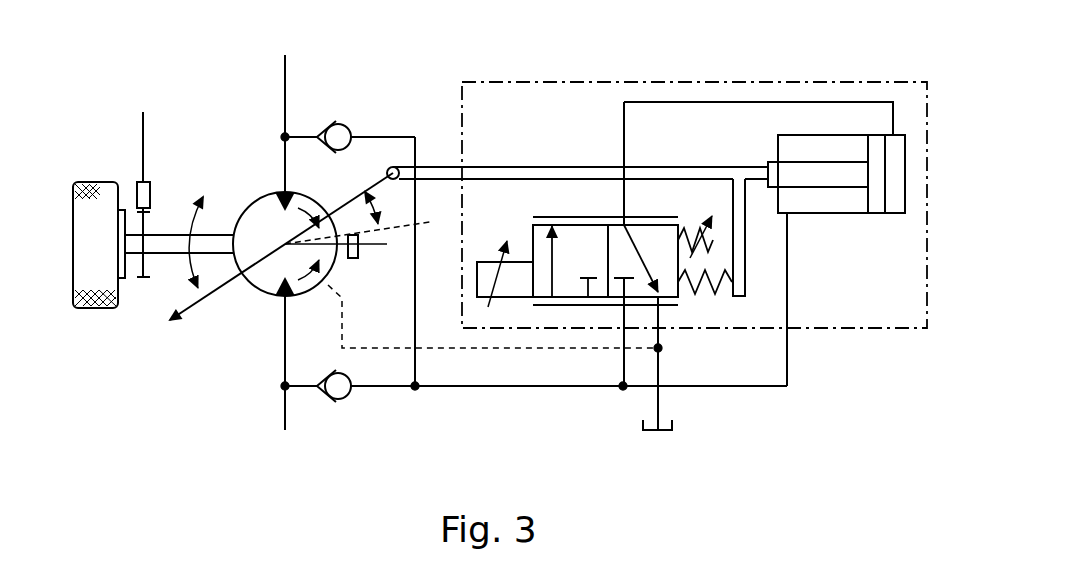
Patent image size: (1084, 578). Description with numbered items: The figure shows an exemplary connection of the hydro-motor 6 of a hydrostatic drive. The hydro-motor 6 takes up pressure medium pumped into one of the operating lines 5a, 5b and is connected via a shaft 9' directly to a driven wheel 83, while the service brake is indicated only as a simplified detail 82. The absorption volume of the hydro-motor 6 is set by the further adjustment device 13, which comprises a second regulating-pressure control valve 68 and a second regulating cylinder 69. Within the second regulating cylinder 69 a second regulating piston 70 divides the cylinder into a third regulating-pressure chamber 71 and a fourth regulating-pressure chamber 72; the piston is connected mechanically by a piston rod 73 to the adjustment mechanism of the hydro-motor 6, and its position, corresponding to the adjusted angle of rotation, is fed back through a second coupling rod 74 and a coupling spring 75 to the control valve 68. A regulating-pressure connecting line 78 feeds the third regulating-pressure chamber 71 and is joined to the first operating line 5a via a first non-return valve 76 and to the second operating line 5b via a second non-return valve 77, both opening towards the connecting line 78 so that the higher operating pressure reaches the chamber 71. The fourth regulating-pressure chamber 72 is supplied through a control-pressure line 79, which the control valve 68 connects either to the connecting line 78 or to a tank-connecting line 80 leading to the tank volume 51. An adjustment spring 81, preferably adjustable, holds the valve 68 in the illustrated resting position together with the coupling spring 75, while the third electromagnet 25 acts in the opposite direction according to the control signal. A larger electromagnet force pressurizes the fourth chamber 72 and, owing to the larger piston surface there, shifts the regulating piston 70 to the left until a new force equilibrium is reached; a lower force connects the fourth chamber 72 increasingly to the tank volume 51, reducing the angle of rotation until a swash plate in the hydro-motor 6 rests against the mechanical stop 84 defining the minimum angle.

The first operating line 5a is at (283, 70).
The second operating line 5b is at (283, 408).
The hydro-motor 6 is at (268, 206).
The shaft 9' is at (179, 208).
The further adjustment device 13 is at (894, 330).
The third electromagnet 25 is at (522, 270).
The tank volume 51 is at (654, 433).
The second regulating-pressure control valve 68 is at (548, 318).
The second regulating cylinder 69 is at (818, 268).
The second regulating piston 70 is at (876, 205).
The third regulating-pressure chamber 71 is at (823, 150).
The fourth regulating-pressure chamber 72 is at (893, 205).
The piston rod 73 is at (493, 176).
The second coupling rod 74 is at (745, 283).
The coupling spring 75 is at (708, 296).
The first non-return valve 76 is at (341, 132).
The second non-return valve 77 is at (342, 391).
The regulating-pressure connecting line 78 is at (725, 388).
The control-pressure line 79 is at (622, 132).
The tank-connecting line 80 is at (655, 404).
The adjustment spring 81 is at (693, 230).
The service brake 82 is at (130, 122).
The driven wheel 83 is at (97, 277).
The mechanical stop 84 is at (357, 260).